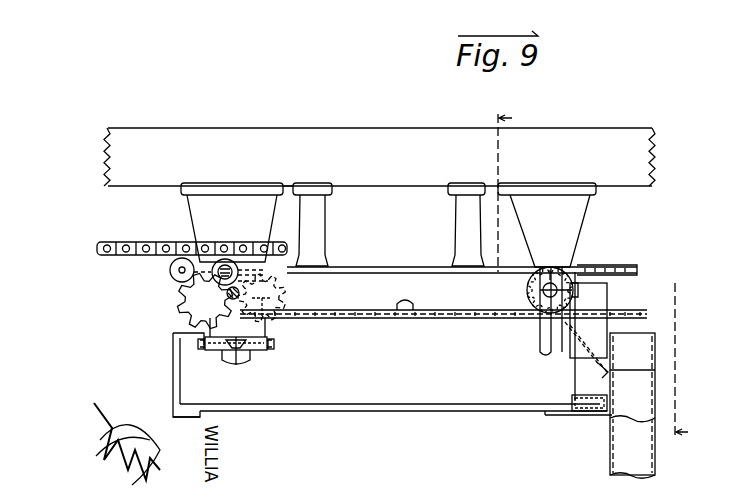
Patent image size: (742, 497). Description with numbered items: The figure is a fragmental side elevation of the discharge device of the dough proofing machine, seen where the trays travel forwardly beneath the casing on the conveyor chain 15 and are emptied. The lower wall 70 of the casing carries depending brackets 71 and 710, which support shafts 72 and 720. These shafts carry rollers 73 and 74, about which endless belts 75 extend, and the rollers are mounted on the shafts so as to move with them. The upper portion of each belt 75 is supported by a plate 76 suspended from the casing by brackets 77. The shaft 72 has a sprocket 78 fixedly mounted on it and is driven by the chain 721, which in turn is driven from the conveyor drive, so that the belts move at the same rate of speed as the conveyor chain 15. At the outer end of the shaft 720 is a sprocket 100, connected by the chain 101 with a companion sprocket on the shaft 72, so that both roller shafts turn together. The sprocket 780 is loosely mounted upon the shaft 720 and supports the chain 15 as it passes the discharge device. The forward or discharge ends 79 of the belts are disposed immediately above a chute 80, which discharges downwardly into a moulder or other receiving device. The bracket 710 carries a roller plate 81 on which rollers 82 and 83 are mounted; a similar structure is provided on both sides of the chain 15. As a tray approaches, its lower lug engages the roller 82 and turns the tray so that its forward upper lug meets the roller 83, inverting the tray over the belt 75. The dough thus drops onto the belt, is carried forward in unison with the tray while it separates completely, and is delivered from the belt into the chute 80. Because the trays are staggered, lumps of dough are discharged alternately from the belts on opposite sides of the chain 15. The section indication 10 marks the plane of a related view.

The section line 10 is at (588, 279).
The chain 15 is at (116, 241).
The lower wall 70 is at (396, 133).
The bracket 71 is at (572, 224).
The shaft 72 is at (580, 291).
The roller 73 is at (580, 293).
The roller 74 is at (300, 325).
The endless belt 75 is at (410, 310).
The plate 76 is at (445, 275).
The bracket 77 is at (463, 213).
The sprocket 78 is at (577, 279).
The discharge end 79 is at (578, 287).
The chute 80 is at (610, 362).
The roller plate 81 is at (253, 253).
The roller 82 is at (182, 258).
The roller 83 is at (294, 184).
The sprocket 100 is at (312, 322).
The chain 101 is at (495, 275).
The bracket 710 is at (207, 203).
The shaft 720 is at (188, 294).
The chain 721 is at (635, 262).
The sprocket 780 is at (205, 306).